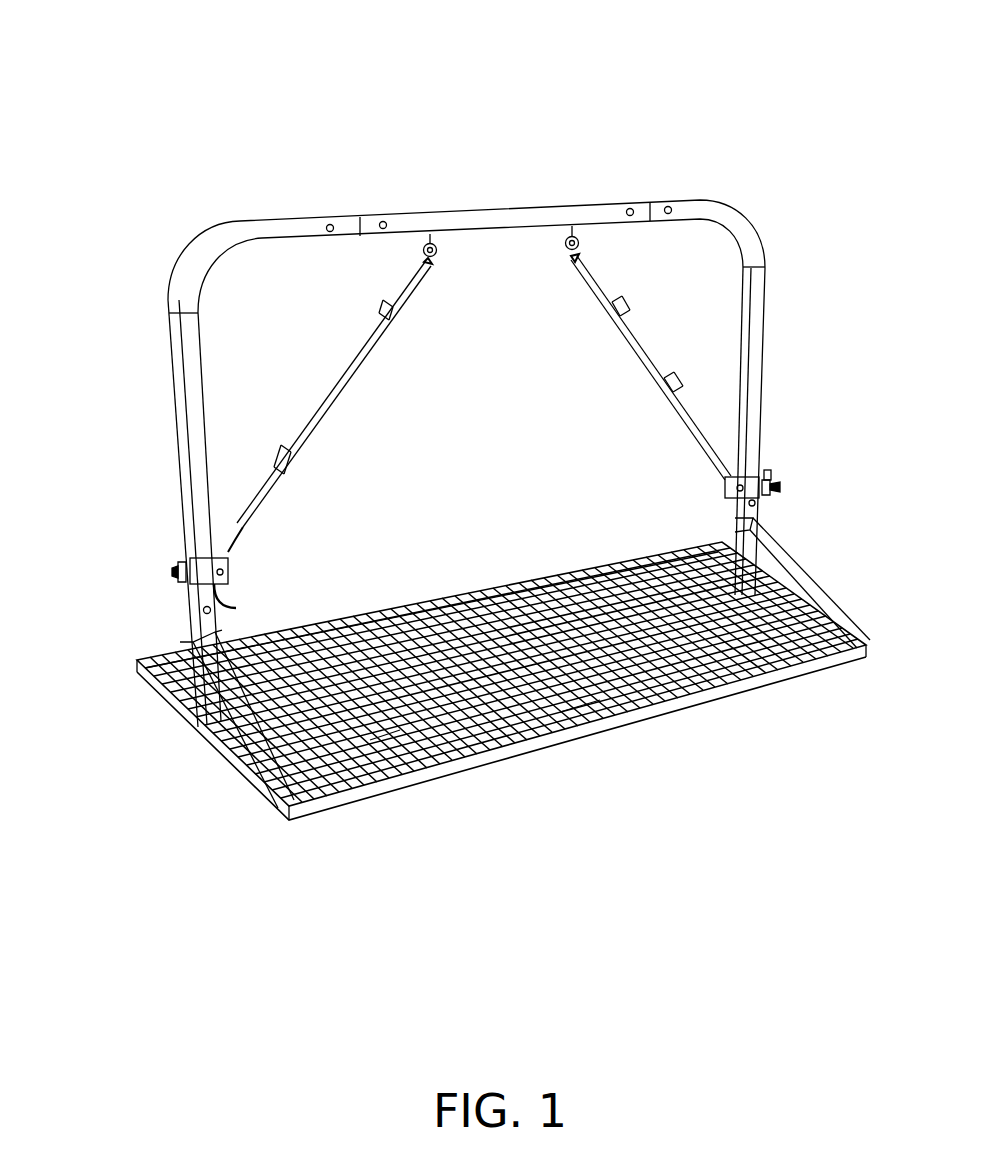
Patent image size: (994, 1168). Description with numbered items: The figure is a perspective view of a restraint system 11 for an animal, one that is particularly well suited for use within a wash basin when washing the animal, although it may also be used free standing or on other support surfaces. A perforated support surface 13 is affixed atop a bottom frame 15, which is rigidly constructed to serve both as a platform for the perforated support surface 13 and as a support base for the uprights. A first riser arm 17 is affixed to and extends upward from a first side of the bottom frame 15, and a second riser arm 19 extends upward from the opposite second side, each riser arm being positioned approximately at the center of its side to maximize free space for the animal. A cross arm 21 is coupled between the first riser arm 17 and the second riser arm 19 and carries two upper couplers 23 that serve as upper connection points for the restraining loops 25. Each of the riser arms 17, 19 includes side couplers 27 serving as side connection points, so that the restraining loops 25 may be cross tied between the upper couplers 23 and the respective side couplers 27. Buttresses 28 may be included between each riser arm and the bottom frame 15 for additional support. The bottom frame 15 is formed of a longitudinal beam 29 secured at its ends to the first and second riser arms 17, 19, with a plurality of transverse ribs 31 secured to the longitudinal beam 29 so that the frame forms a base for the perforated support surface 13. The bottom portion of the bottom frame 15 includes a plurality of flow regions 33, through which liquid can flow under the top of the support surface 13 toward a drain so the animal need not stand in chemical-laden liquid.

The restraint system 11 is at (779, 190).
The perforated support surface 13 is at (773, 685).
The bottom frame 15 is at (232, 723).
The first riser arm 17 is at (182, 438).
The second riser arm 19 is at (762, 315).
The cross arm 21 is at (470, 208).
The upper couplers 23 is at (565, 262).
The restraining loops 25 is at (638, 350).
The side couplers 27 is at (180, 573).
The buttresses 28 is at (820, 595).
The longitudinal beam 29 is at (553, 640).
The transverse ribs 31 is at (582, 700).
The flow regions 33 is at (385, 730).